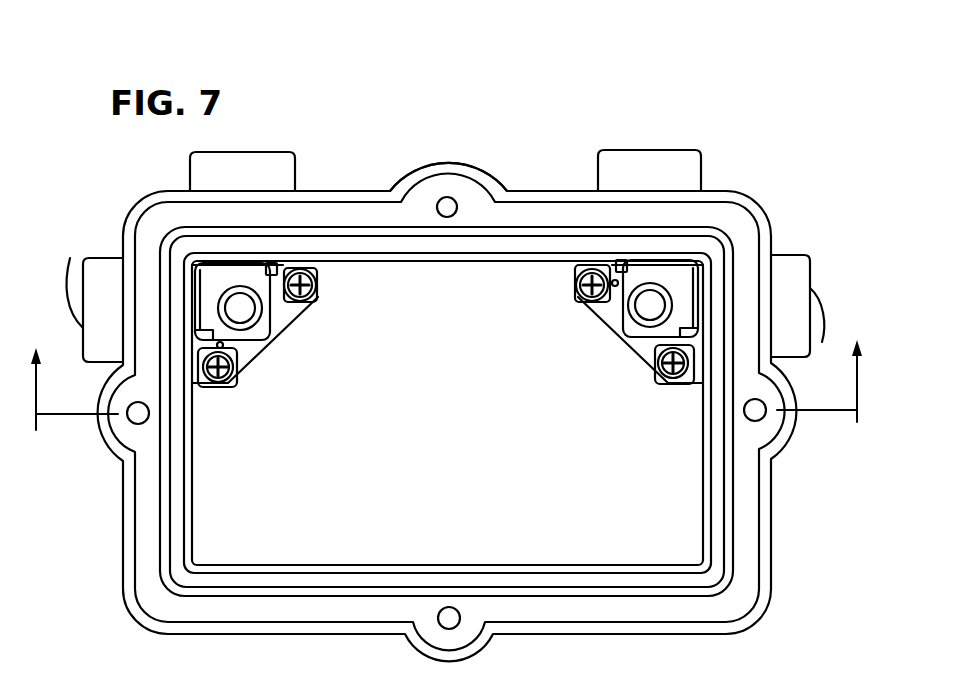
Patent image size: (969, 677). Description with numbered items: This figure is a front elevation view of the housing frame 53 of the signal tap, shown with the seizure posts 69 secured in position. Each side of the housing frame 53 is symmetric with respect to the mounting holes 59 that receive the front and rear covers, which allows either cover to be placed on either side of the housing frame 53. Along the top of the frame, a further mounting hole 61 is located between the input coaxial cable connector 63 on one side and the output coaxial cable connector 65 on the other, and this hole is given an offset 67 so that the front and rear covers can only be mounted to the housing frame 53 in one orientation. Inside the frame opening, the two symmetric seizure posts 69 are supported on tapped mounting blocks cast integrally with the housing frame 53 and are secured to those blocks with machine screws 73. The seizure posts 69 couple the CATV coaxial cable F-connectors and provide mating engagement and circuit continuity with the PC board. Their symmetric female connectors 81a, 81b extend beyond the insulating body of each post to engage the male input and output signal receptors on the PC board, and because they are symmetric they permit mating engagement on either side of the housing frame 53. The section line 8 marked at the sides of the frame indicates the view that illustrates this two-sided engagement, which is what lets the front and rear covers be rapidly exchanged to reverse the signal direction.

The housing frame 53 is at (152, 169).
The mounting holes 59 is at (131, 423).
The mounting hole 61 is at (439, 201).
The input coaxial cable connector 63 is at (70, 258).
The output coaxial cable connector 65 is at (822, 342).
The offset 67 is at (472, 190).
The seizure posts 69 is at (316, 287).
The machine screws 73 is at (312, 300).
The female connector 81a is at (650, 314).
The female connector 81b is at (243, 314).
The section line 8- 8 is at (446, 398).